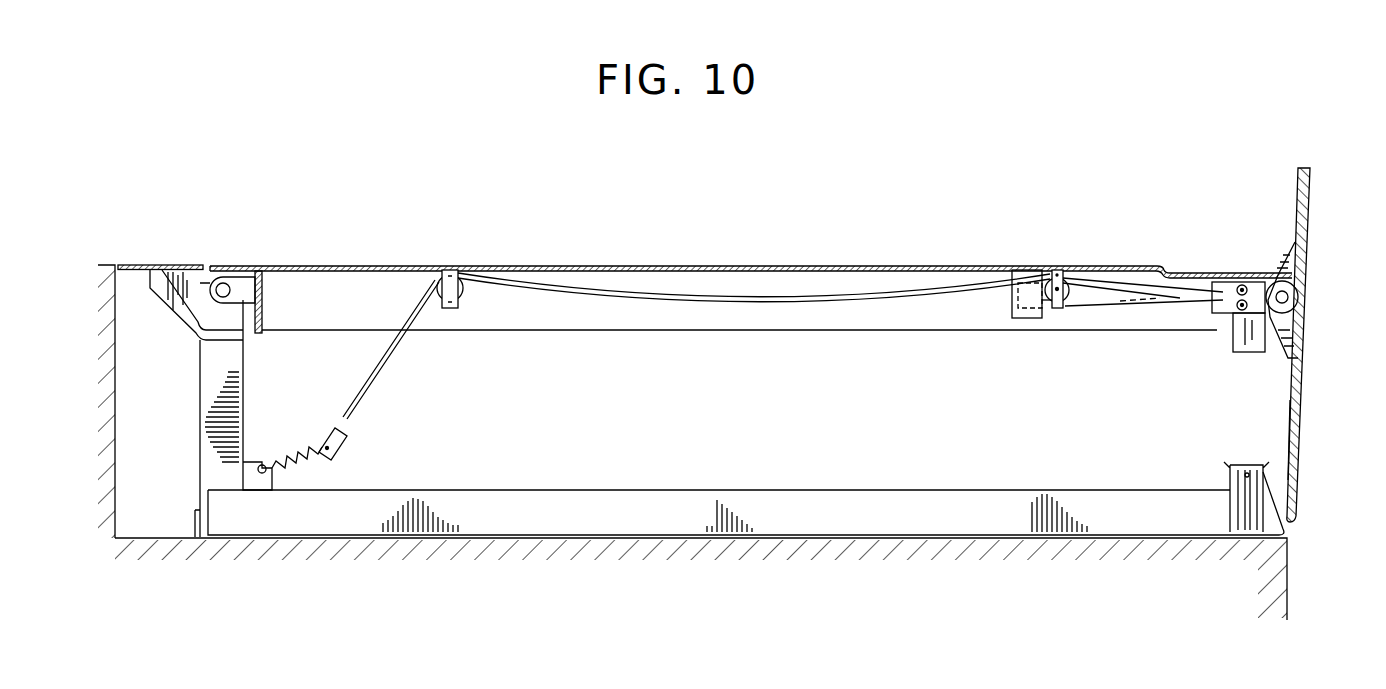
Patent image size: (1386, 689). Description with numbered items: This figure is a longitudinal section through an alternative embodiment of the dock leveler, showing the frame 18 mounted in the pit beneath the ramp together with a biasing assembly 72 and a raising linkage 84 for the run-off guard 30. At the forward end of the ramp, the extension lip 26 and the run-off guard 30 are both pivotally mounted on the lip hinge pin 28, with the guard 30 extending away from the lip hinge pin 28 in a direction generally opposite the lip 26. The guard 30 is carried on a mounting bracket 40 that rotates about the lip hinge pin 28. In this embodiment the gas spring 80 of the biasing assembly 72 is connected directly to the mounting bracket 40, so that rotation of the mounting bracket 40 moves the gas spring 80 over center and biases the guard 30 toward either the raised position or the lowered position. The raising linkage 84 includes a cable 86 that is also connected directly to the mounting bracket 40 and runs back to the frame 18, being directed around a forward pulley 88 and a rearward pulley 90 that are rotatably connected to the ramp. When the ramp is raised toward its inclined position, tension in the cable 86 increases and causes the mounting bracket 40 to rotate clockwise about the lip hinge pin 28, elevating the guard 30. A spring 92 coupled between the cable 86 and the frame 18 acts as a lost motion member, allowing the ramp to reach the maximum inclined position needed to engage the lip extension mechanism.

The frame 18 is at (203, 478).
The extension lip 26 is at (1307, 367).
The lip hinge pin 28 is at (1300, 297).
The run-off guard 30 is at (1310, 190).
The mounting bracket 40 is at (1300, 258).
The biasing assembly 72 is at (1221, 320).
The gas spring 80 is at (1088, 307).
The raising linkage 84 is at (1040, 333).
The cable 86 is at (393, 380).
The forward pulley 88 is at (1068, 268).
The rearward pulley 90 is at (475, 279).
The spring 92 is at (300, 445).